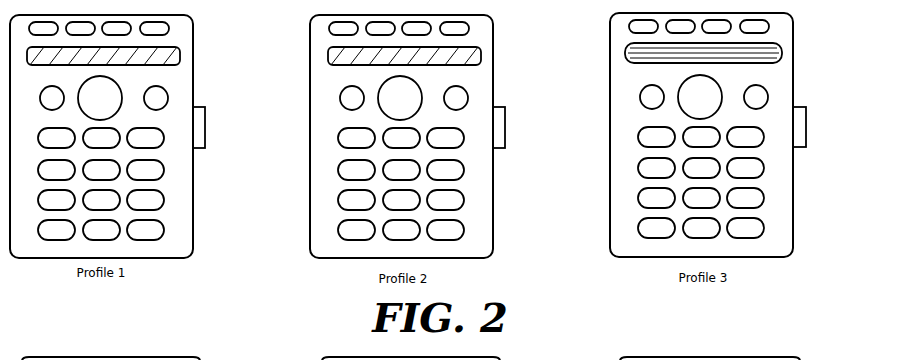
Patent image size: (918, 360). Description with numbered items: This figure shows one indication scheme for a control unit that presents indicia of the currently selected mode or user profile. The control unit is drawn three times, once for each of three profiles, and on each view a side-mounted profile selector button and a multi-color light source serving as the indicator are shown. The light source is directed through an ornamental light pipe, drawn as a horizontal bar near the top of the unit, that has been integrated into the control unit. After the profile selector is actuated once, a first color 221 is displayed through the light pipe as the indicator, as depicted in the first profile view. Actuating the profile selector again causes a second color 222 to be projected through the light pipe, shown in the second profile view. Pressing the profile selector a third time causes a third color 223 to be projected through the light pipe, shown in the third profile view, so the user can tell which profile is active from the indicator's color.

The first color 221 is at (147, 38).
The second color 222 is at (435, 41).
The third color 223 is at (744, 36).